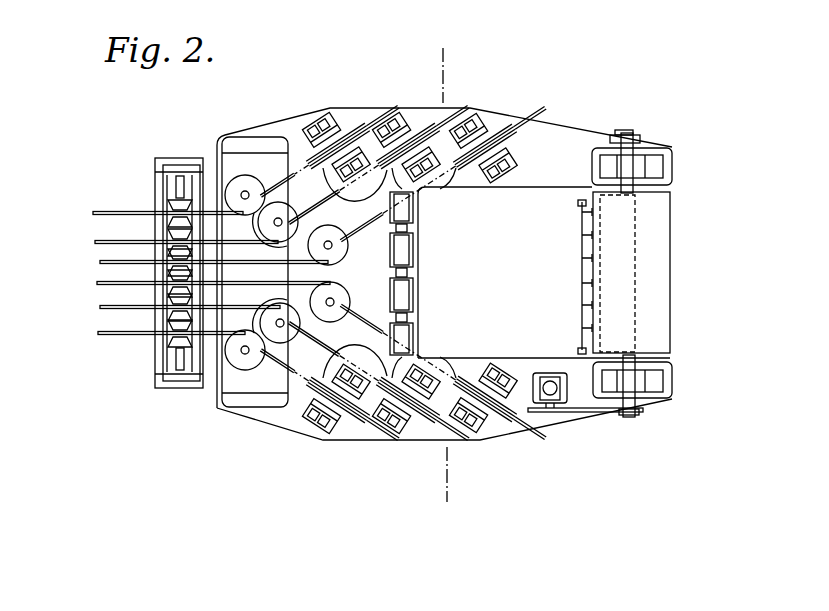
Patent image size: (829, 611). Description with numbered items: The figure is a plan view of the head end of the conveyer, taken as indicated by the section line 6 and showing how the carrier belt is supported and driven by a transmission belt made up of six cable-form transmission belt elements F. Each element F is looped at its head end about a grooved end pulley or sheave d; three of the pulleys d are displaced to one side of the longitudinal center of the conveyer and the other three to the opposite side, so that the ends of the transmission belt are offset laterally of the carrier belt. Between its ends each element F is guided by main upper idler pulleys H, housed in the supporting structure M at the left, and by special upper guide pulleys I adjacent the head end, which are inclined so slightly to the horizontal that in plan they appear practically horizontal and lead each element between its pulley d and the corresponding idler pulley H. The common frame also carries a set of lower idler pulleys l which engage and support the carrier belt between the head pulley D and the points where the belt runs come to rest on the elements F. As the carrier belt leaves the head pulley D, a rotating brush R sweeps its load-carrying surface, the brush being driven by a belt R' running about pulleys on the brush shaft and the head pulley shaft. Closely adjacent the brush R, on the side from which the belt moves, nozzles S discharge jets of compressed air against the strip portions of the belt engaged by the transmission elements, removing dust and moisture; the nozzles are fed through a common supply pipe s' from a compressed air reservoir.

The magazine / strip holder housing M is at (158, 362).
The main upper idler pulleys H is at (168, 210).
The transmission belt elements F is at (93, 213).
The upper guide pulleys I is at (260, 226).
The grooved end pulley d is at (326, 196).
The lower idler pulleys l is at (416, 215).
The nozzles S is at (582, 213).
The common supply pipe s' is at (574, 270).
The carrier belt head pulley D is at (670, 259).
The rotating brush R is at (655, 273).
The belt R' is at (633, 151).
The section line 6- 6 is at (446, 61).